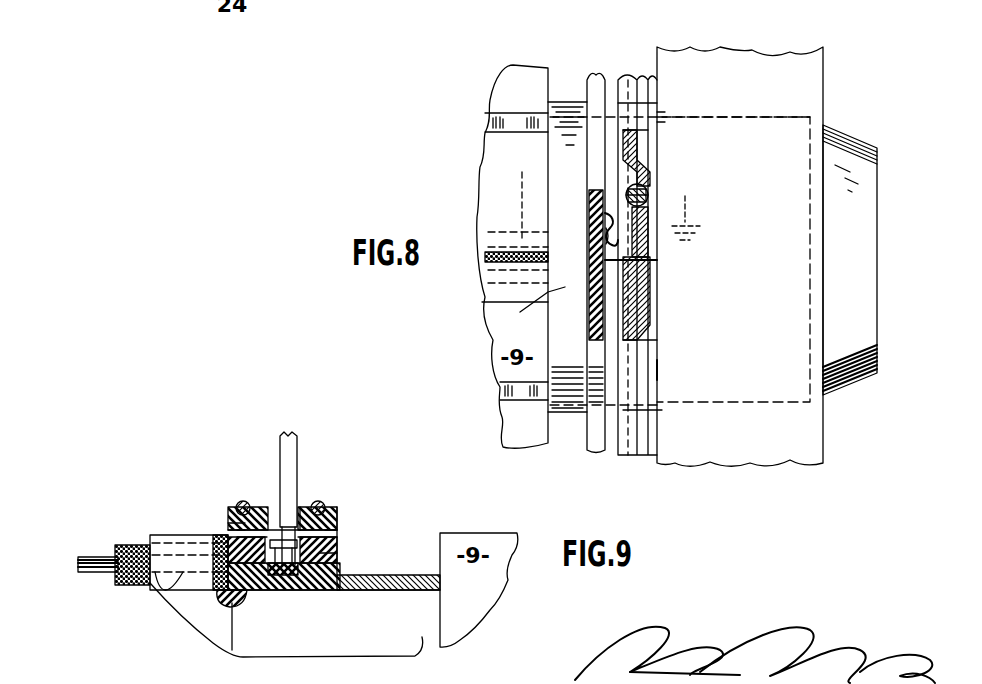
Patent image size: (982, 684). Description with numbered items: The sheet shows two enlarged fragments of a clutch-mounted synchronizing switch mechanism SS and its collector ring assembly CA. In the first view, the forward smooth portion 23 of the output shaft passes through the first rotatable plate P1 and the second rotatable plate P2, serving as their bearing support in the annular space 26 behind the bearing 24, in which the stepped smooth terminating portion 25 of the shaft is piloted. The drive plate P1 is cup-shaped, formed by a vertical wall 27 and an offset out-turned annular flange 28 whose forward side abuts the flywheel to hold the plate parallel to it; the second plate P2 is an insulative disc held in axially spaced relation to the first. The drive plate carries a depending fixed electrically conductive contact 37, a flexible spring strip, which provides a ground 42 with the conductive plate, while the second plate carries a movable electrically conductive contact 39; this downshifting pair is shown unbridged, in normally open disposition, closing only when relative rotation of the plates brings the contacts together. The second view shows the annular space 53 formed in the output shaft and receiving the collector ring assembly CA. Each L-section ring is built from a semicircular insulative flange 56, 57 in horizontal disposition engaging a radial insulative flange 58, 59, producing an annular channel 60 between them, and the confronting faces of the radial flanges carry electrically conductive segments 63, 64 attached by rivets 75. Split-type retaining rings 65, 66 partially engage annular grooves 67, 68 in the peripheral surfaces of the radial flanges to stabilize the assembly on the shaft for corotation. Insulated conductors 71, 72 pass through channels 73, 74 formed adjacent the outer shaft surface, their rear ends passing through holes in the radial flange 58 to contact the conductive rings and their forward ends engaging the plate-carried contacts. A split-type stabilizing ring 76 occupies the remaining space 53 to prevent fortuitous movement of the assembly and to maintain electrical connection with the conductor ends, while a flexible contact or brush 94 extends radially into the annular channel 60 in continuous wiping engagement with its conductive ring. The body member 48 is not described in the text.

In FIG. 8, the forward smooth portion of the output shaft 23 is at (572, 435).
In FIG. 8, the bearing 24 is at (752, 66).
In FIG. 8, the stepped smooth terminating portion of the output shaft 25 is at (845, 135).
In FIG. 8, the annular space 26 is at (567, 90).
In FIG. 8, the vertical wall 27 is at (640, 160).
In FIG. 8, the out-turned annular flange 28 is at (655, 117).
In FIG. 8, the fixed electrically conductive contact 37 is at (597, 270).
In FIG. 8, the electrically conductive contact 39 is at (590, 240).
In FIG. 8, the ground 42 is at (690, 196).
In FIG. 8, the left body member 48 is at (482, 148).
In FIG. 8, the insulated conductor 72 is at (530, 315).
In FIG. 9, the insulated conductor 72 is at (283, 597).
In FIG. 8, the channel 74 is at (519, 192).
In FIG. 8, the synchronizing switch mechanism SS is at (647, 257).
In FIG. 8, the first rotatable plate P1 is at (672, 372).
In FIG. 8, the second rotatable plate P2 is at (601, 457).
In FIG. 9, the collector ring assembly CA is at (214, 512).
In FIG. 9, the annular space 53 is at (422, 637).
In FIG. 9, the semicircular insulative flange 56 is at (263, 597).
In FIG. 9, the semicircular insulative flange 57 is at (317, 593).
In FIG. 9, the radial insulative flange 58 is at (228, 508).
In FIG. 9, the radial insulative flange 59 is at (337, 518).
In FIG. 9, the annular channel 60 is at (277, 513).
In FIG. 9, the electrically conductive segment 63 is at (248, 503).
In FIG. 9, the electrically conductive segment 64 is at (302, 507).
In FIG. 9, the split-type retaining ring 65 is at (238, 503).
In FIG. 9, the split-type retaining ring 66 is at (325, 503).
In FIG. 9, the annular groove 67 is at (227, 523).
In FIG. 9, the annular groove 68 is at (337, 522).
In FIG. 9, the insulated conductor 71 is at (218, 593).
In FIG. 9, the channel 73 is at (160, 610).
In FIG. 9, the rivet 75 is at (337, 553).
In FIG. 9, the split-type stabilizing ring 76 is at (417, 573).
In FIG. 9, the flexible contact (brush) 94 is at (297, 433).